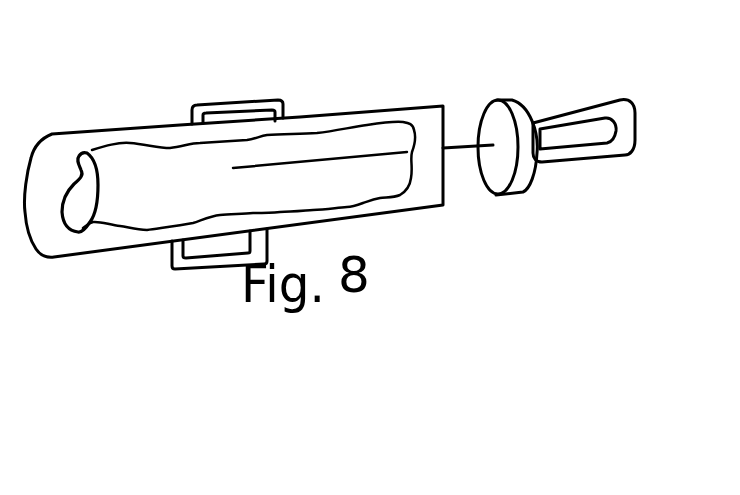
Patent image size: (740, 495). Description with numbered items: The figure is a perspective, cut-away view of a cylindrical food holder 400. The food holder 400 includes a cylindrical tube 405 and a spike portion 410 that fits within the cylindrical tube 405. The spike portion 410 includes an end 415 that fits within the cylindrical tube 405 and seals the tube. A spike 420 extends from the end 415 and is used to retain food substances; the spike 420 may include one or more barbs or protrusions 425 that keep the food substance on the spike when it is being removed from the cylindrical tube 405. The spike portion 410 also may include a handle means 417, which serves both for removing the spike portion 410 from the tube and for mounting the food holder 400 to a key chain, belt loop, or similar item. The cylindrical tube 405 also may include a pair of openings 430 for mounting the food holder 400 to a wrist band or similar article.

The cylindrical food holder 400 is at (250, 75).
The cylindrical tube 405 is at (114, 254).
The spike portion 410 is at (490, 199).
The end 415 is at (513, 97).
The handle means 417 is at (592, 162).
The spike 420 is at (290, 164).
The barbs or protrusions 425 is at (243, 162).
The pair of openings 430 is at (172, 268).